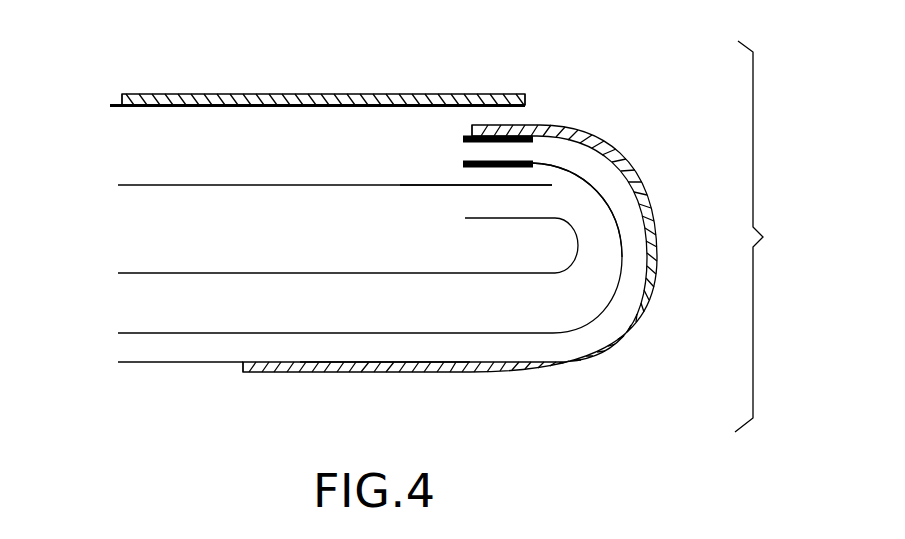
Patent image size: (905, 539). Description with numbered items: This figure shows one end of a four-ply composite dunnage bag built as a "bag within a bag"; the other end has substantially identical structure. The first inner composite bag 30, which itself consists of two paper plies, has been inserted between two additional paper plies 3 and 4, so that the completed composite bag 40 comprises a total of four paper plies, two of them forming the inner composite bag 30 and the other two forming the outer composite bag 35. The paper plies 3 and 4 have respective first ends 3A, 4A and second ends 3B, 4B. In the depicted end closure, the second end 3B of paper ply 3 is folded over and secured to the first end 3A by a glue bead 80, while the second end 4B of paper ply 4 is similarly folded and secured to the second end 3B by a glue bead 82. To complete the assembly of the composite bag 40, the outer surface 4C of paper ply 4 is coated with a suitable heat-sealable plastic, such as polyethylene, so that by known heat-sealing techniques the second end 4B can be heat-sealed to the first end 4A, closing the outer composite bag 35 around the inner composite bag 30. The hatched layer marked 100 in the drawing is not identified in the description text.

The paper ply 3 is at (348, 256).
The first end of paper ply 3 3A is at (560, 174).
The second end of paper ply 3 3B is at (577, 142).
The paper ply 4 is at (298, 235).
The first end of paper ply 4 4A is at (545, 97).
The second end of paper ply 4 4B is at (563, 117).
The outer surface of paper ply 4 4C is at (110, 105).
The first inner composite bag 30 is at (152, 272).
The outer composite bag 35 is at (414, 398).
The composite bag 40 is at (772, 236).
The glue bead 80 is at (463, 164).
The glue bead 82 is at (463, 140).
The hatched cover layer 100 is at (477, 97).